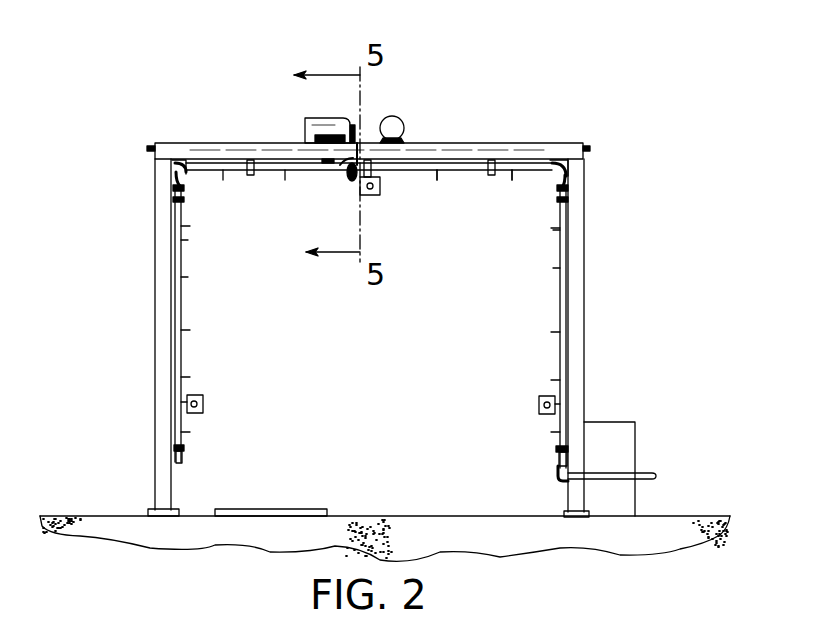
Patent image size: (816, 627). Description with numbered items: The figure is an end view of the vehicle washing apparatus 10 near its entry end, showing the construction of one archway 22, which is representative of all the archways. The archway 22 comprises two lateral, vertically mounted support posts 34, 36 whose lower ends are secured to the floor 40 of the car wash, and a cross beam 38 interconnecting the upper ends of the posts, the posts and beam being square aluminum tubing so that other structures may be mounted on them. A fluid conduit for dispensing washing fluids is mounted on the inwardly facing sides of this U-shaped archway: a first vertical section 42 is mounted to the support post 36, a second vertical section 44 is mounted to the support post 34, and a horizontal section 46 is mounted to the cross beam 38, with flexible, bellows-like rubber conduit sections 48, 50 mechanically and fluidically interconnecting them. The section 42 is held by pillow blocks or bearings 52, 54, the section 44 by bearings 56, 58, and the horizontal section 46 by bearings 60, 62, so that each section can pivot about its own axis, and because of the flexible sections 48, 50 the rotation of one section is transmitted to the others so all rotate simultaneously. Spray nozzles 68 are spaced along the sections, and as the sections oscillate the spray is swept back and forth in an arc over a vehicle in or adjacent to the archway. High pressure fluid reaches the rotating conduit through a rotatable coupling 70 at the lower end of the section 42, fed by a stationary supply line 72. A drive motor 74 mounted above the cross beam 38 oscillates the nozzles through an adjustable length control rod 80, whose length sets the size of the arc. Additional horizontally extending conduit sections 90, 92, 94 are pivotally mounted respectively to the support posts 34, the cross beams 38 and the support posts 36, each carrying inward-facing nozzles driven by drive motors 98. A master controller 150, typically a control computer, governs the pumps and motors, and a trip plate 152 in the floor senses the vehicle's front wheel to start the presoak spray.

The vehicle washing apparatus 10 is at (478, 90).
The archway 22 is at (196, 143).
The support post 34 is at (155, 262).
The support post 36 is at (585, 284).
The cross beam 38 is at (262, 143).
The floor 40 is at (113, 515).
The first vertical section 42 is at (559, 305).
The second vertical section 44 is at (183, 305).
The horizontal section 46 is at (262, 172).
The flexible conduit section 48 is at (562, 145).
The flexible conduit section 50 is at (171, 165).
The bearing 52 is at (556, 450).
The bearing 54 is at (566, 212).
The bearing 56 is at (184, 450).
The bearing 58 is at (175, 210).
The bearing 60 is at (249, 161).
The bearing 62 is at (493, 160).
The spray nozzles 68 is at (512, 175).
The rotatable coupling 70 is at (558, 483).
The stationary supply line 72 is at (620, 480).
The drive motor 74 is at (320, 118).
The adjustable length control rod 80 is at (347, 178).
The horizontally extending conduit section 90 is at (203, 403).
The horizontally extending conduit section 92 is at (372, 195).
The horizontally extending conduit 94 is at (538, 405).
The drive motor 98 is at (413, 114).
The master controller 150 is at (636, 450).
The trip plate 152 is at (320, 509).